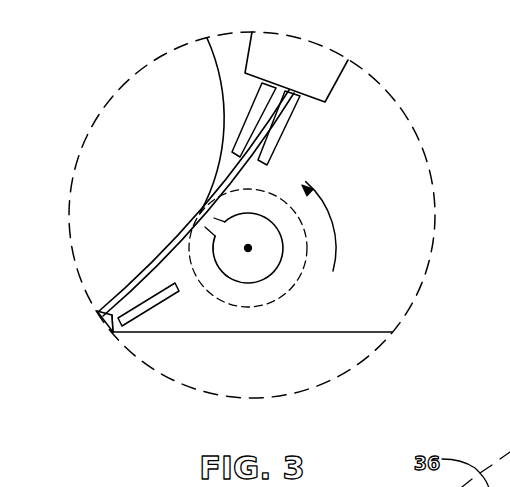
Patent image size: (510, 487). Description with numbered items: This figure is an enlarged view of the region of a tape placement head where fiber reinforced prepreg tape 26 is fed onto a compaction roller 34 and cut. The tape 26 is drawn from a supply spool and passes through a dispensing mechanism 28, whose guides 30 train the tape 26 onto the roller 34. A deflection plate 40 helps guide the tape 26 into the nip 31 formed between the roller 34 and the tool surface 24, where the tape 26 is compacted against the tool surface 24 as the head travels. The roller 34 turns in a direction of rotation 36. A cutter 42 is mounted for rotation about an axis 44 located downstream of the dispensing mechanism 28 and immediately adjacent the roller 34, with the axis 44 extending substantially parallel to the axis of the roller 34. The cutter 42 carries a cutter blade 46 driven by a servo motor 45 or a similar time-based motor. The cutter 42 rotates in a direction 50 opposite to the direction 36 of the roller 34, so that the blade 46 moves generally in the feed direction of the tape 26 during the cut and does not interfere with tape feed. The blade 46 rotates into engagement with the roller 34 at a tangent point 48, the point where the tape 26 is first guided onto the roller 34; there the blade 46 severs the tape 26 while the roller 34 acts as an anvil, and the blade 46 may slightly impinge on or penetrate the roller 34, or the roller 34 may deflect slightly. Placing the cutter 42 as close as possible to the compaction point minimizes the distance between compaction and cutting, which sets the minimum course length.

The tool surface 24 is at (374, 324).
The prepreg tape 26 is at (108, 322).
The dispensing mechanism 28 is at (307, 60).
The guides 30 is at (300, 137).
The nip 31 is at (119, 336).
The compaction roller 34 is at (108, 237).
The direction of rotation of the roller 36 is at (200, 160).
The deflection plate 40 is at (150, 308).
The cutter 42 is at (252, 268).
The axis 44 is at (250, 248).
The servo motor 45 is at (270, 307).
The cutter blade 46 is at (212, 203).
The tangent point 48 is at (192, 211).
The direction of rotation of the cutter 50 is at (333, 215).